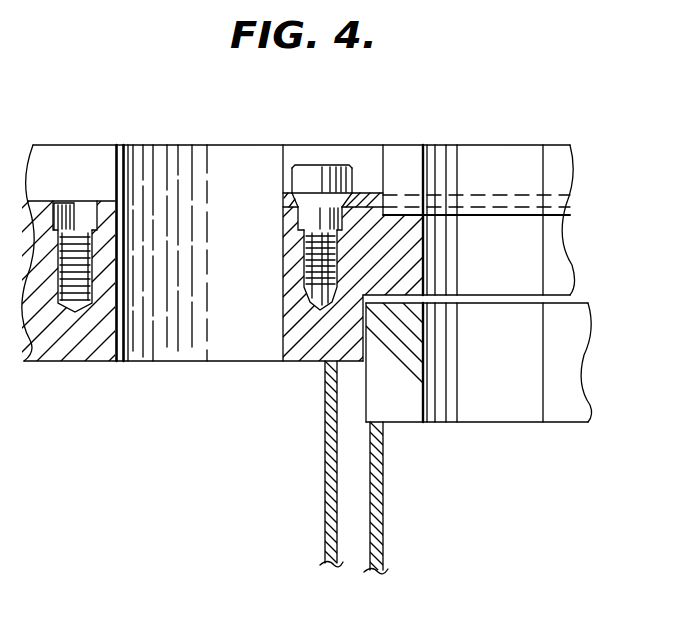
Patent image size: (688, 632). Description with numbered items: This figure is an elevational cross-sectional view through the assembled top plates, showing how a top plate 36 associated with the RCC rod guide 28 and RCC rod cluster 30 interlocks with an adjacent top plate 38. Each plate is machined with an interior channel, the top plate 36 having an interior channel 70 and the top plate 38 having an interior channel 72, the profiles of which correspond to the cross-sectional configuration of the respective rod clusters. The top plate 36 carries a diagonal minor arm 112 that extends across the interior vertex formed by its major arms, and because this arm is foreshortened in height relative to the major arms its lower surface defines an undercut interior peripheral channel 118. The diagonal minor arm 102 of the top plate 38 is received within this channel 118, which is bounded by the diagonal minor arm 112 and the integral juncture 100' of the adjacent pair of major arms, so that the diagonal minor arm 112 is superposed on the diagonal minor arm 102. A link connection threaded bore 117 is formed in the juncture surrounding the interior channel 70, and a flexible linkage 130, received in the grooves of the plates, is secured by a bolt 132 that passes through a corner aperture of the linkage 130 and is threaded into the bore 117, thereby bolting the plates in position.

The top plate 36 is at (402, 122).
The top plate 38 is at (503, 502).
The interior channel 70 is at (233, 230).
The interior channel 72 is at (507, 366).
The integral juncture of adjacent major arms 100' is at (356, 284).
The diagonal minor arm 102 is at (415, 423).
The diagonal minor arm 112 is at (415, 260).
The link connection threaded bore 117 is at (305, 265).
The undercut interior peripheral channel 118 is at (351, 382).
The flexible linkage 130 is at (362, 193).
The bolt 132 is at (298, 163).
The rod guide 28 is at (325, 502).
The RCC rod cluster 30 is at (383, 532).